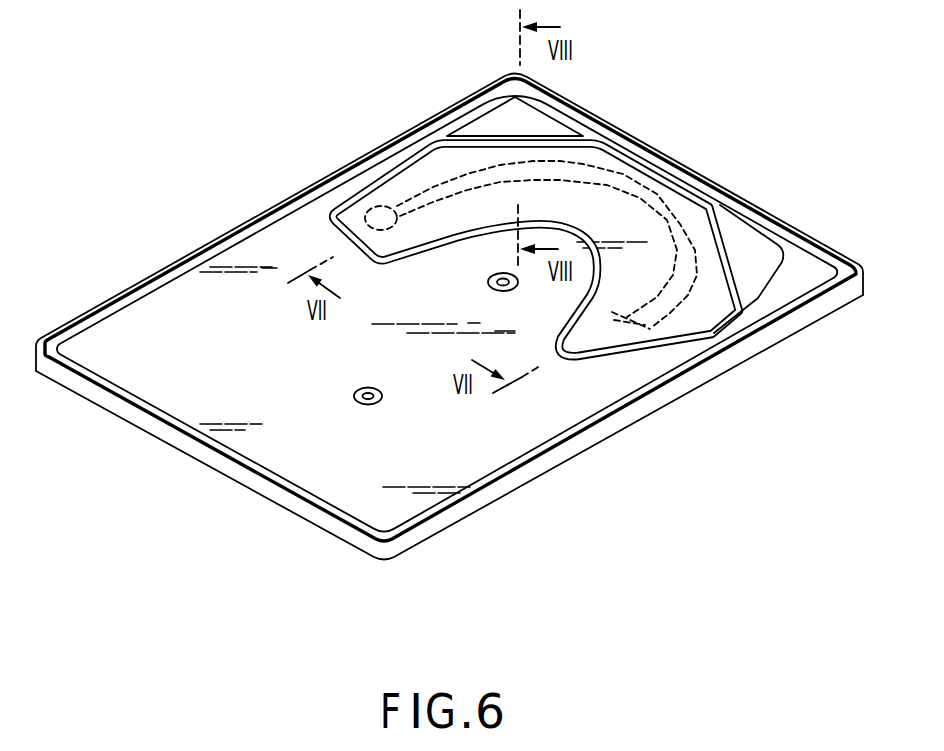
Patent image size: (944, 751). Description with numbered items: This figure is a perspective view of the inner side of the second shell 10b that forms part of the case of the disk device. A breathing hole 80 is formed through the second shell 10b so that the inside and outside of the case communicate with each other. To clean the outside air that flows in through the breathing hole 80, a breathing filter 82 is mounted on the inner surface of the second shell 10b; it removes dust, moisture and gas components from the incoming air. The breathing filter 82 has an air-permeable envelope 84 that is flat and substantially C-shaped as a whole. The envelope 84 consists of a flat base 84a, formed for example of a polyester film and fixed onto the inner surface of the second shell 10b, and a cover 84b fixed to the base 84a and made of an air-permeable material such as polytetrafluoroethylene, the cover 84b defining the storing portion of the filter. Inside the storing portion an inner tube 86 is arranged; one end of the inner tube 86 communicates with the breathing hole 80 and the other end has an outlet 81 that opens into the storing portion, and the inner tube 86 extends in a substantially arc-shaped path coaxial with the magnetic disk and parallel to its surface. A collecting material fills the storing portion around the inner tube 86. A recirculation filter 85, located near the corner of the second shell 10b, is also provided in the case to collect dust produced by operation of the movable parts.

The second shell 10b is at (510, 457).
The breathing hole 80 is at (380, 214).
The outlet 81 is at (655, 335).
The breathing filter 82 is at (421, 158).
The envelope 84 is at (452, 230).
The base 84a is at (758, 296).
The cover 84b is at (590, 342).
The recirculation filter 85 is at (491, 122).
The inner tube 86 is at (683, 185).